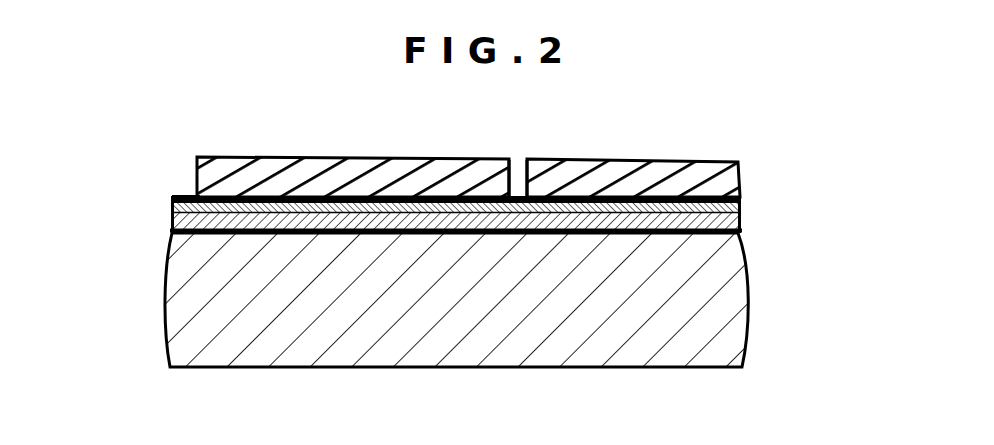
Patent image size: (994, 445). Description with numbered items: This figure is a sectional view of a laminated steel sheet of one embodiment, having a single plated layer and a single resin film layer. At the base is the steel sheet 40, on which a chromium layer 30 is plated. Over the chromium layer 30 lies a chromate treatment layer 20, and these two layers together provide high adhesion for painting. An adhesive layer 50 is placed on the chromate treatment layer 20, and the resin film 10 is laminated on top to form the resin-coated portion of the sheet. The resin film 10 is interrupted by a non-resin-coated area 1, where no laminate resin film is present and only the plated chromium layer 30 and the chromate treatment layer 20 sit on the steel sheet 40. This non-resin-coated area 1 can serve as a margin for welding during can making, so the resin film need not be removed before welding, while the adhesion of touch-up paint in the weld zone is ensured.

The non-resin-coated area 1 is at (519, 196).
The resin film 10 is at (740, 167).
The chromate treatment layer 20 is at (172, 199).
The chromium layer 30 is at (173, 226).
The steel sheet 40 is at (734, 290).
The adhesive layer 50 is at (196, 196).